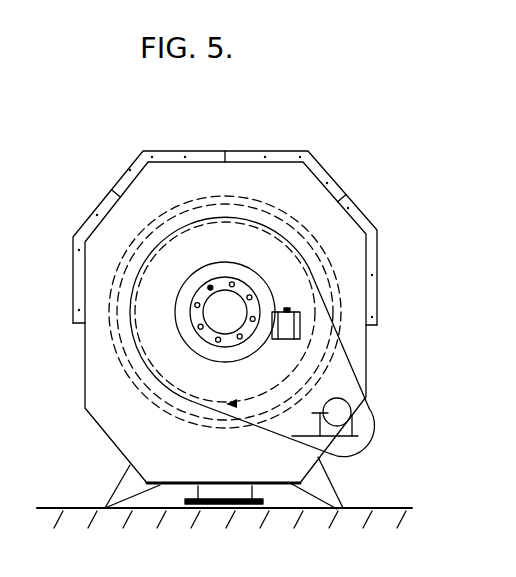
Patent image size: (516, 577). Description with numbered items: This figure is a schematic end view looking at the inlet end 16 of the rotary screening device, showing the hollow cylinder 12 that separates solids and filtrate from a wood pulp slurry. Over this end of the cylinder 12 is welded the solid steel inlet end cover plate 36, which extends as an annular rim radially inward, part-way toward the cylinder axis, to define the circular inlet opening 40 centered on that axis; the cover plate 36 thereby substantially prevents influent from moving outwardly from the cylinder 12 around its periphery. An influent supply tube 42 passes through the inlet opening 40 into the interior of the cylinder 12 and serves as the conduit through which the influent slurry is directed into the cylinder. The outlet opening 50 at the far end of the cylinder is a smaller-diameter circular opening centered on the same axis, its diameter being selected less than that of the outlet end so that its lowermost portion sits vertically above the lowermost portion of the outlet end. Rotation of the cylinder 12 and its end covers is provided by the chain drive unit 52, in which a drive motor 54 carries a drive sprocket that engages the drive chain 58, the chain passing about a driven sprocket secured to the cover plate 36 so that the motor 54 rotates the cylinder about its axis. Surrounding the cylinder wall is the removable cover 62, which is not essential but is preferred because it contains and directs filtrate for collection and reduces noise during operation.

The hollow cylinder 12 is at (250, 195).
The inlet end 16 is at (120, 264).
The inlet end cover plate 36 is at (140, 320).
The inlet opening 40 is at (190, 332).
The influent supply tube 42 is at (226, 290).
The outlet opening 50 is at (309, 268).
The chain drive unit 52 is at (380, 389).
The drive motor 54 is at (370, 424).
The drive chain 58 is at (333, 368).
The removable cover 62 is at (162, 158).